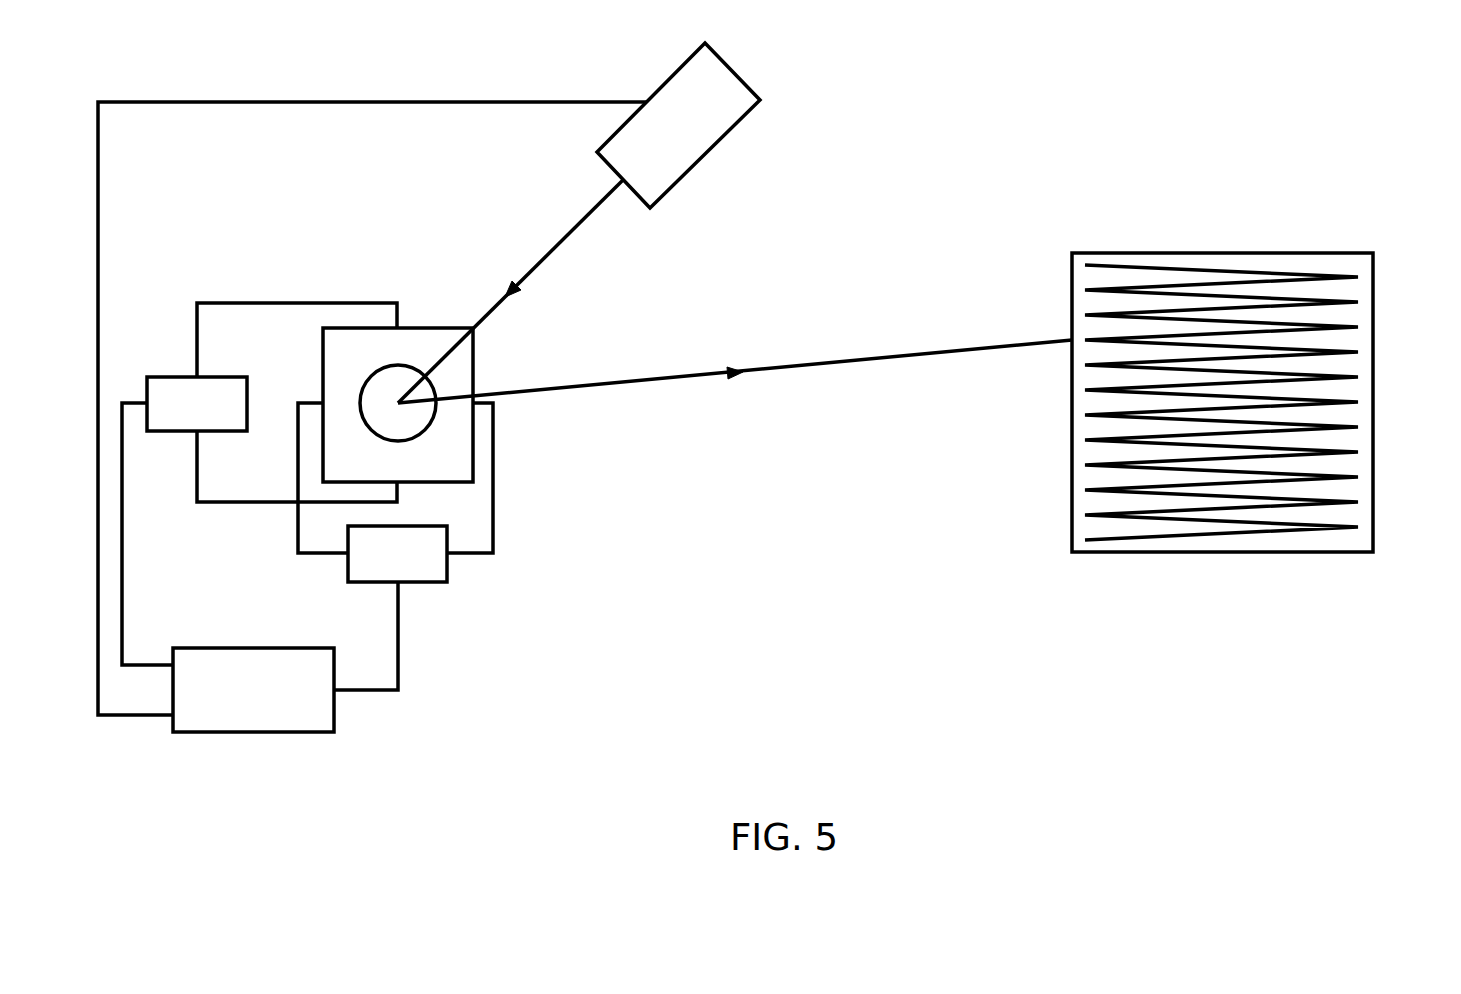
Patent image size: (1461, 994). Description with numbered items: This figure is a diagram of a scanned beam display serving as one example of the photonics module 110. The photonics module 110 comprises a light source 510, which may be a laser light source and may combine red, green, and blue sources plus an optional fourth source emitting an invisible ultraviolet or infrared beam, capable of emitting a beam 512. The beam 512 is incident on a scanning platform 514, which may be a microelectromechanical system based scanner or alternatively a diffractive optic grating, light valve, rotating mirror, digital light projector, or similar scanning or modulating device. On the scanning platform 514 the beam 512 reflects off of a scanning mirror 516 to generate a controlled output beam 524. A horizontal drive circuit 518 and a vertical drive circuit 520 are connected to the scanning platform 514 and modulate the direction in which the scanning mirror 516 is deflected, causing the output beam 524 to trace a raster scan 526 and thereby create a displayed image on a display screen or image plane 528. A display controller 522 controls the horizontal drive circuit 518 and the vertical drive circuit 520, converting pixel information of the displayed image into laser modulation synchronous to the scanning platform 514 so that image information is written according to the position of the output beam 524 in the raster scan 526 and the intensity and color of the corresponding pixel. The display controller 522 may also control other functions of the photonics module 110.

The photonics module 110 is at (1262, 84).
The light source 510 is at (738, 72).
The beam 512 is at (560, 237).
The scanning platform 514 is at (435, 328).
The scanning mirror 516 is at (420, 433).
The horizontal drive circuit 518 is at (185, 377).
The vertical drive circuit 520 is at (448, 566).
The display controller 522 is at (334, 712).
The output beam 524 is at (665, 382).
The raster scan 526 is at (1270, 270).
The display screen 528 is at (1373, 277).